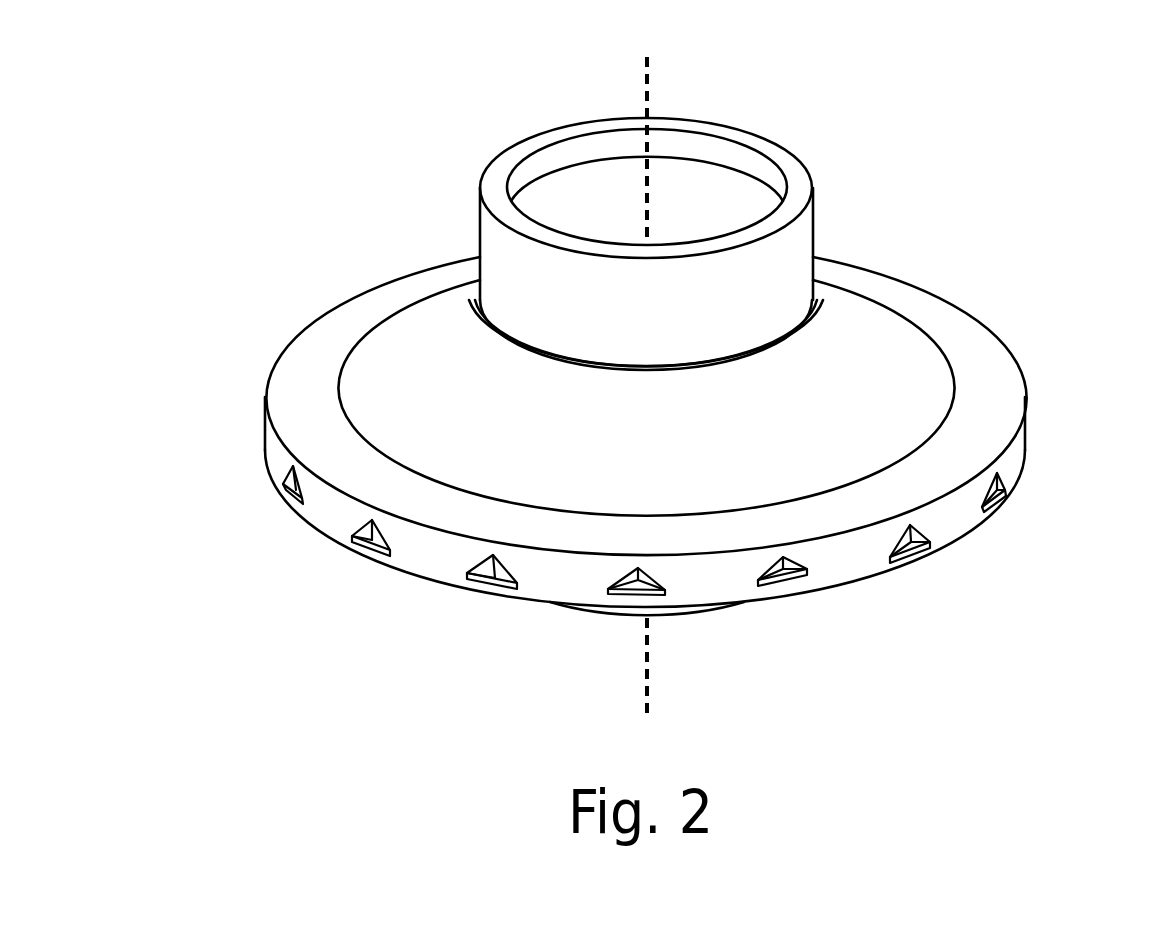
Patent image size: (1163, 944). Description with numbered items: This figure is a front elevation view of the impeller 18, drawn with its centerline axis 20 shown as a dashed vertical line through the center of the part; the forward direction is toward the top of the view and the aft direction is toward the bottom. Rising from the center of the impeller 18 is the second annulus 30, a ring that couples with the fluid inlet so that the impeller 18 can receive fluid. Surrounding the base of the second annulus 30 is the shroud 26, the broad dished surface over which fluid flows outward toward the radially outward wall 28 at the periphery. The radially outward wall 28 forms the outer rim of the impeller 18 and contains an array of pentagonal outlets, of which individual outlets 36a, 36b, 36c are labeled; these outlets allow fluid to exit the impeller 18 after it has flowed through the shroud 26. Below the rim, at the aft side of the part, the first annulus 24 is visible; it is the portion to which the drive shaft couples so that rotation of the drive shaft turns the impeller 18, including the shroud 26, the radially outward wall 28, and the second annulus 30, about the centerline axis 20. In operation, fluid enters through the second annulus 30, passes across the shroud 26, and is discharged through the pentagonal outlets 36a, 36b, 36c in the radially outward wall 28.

The impeller 18 is at (480, 228).
The centerline axis 20 is at (642, 75).
The first annulus 24 is at (578, 608).
The shroud 26 is at (423, 378).
The radially outward wall 28 is at (335, 510).
The second annulus 30 is at (797, 178).
The pentagonal outlet 36a is at (790, 577).
The pentagonal outlet 36b is at (912, 547).
The pentagonal outlet 36c is at (1000, 498).